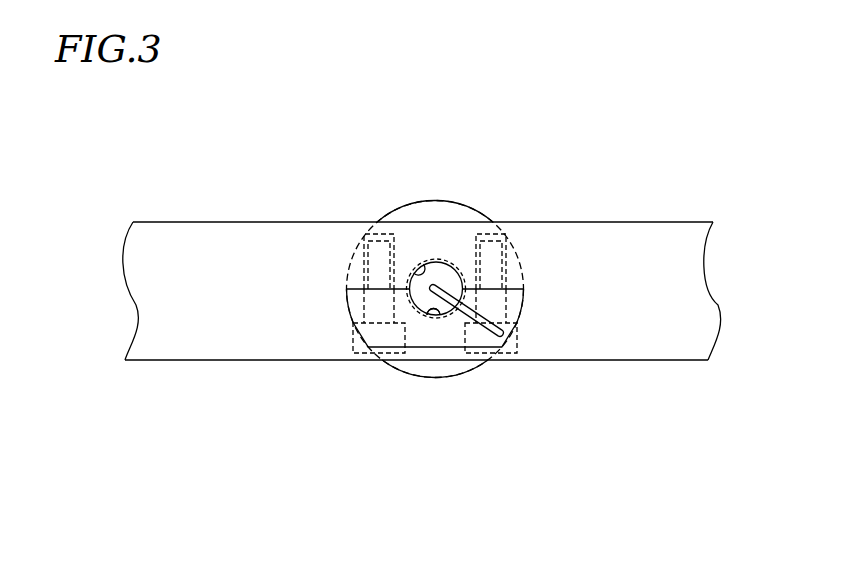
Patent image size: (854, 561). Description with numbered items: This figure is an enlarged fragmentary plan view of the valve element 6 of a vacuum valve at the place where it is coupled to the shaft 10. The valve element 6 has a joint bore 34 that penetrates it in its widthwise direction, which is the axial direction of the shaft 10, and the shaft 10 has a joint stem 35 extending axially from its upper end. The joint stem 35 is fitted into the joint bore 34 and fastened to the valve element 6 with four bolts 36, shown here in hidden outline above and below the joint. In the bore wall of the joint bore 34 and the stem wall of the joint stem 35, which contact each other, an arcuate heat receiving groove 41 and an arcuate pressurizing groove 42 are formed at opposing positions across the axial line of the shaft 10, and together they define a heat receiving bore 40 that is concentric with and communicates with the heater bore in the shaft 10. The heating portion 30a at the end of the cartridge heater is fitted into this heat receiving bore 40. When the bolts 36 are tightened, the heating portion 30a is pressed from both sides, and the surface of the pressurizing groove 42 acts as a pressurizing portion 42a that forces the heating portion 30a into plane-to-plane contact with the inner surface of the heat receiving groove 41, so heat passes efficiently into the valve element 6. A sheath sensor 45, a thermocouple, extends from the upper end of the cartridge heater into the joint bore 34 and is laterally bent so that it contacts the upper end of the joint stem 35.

The valve element 6 is at (203, 240).
The shaft 10 is at (467, 217).
The heating portion 30a is at (450, 262).
The joint bore 34 is at (512, 289).
The joint stem 35 is at (510, 310).
The bolts 36 is at (358, 362).
The heat receiving bore 40 is at (440, 277).
The heat receiving groove 41 is at (415, 273).
The pressurizing groove 42 is at (422, 314).
The pressurizing portion 42a is at (400, 394).
The sheath sensor 45 is at (486, 333).